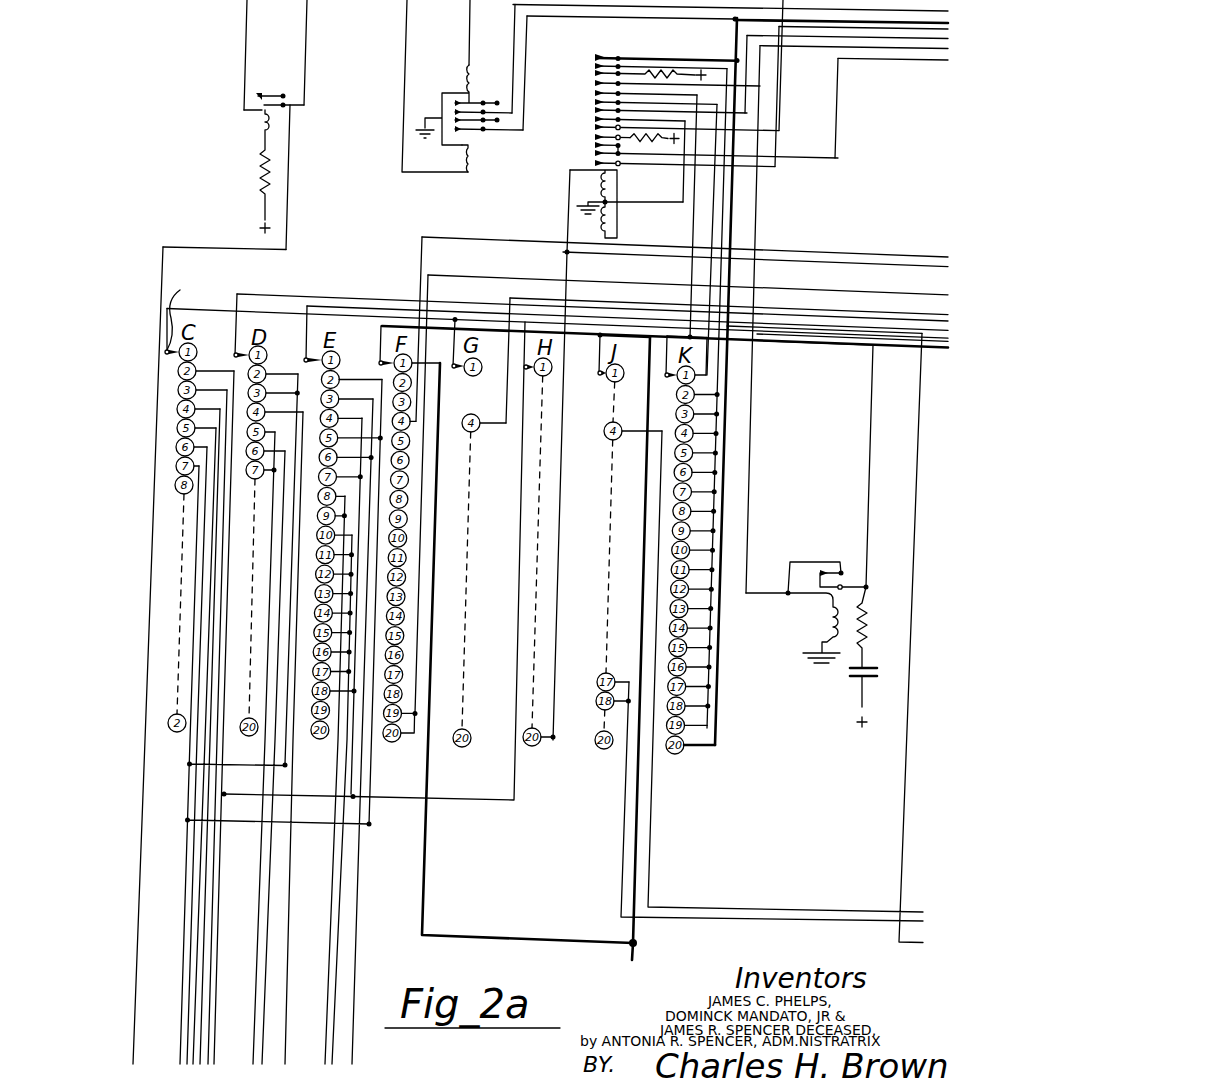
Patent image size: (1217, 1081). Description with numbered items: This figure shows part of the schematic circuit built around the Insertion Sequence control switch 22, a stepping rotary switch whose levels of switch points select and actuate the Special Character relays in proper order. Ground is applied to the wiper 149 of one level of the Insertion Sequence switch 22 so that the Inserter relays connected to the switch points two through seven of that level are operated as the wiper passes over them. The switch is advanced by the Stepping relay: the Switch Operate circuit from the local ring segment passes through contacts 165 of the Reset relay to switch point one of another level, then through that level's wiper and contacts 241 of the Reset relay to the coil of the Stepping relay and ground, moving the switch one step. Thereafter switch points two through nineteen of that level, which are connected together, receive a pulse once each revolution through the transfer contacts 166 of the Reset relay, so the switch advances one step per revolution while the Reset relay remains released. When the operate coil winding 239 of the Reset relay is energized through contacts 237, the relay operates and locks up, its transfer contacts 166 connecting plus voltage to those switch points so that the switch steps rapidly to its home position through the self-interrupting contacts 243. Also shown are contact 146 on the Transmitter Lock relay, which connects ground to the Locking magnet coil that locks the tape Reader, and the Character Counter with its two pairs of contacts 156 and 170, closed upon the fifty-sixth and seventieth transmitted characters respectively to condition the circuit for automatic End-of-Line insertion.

The contact on Transmitter Lock relay XR 146 is at (272, 84).
The contacts of Character Counter CC 170 is at (469, 105).
The contacts of Character Counter CC 156 is at (489, 164).
The transfer contacts of Reset relay RSR 166 is at (596, 66).
The contacts of Reset relay RSR 241 is at (596, 92).
The contacts of Reset relay RSR 165 is at (596, 112).
The contacts of Reset relay RSR 237 is at (596, 160).
The operate coil winding of Reset relay RSR 239 is at (600, 226).
The wiper of Insertion Sequence switch level C 149 is at (193, 315).
The self-interrupting contacts 243 is at (811, 633).
The Insertion Sequence control switch 22 is at (489, 852).